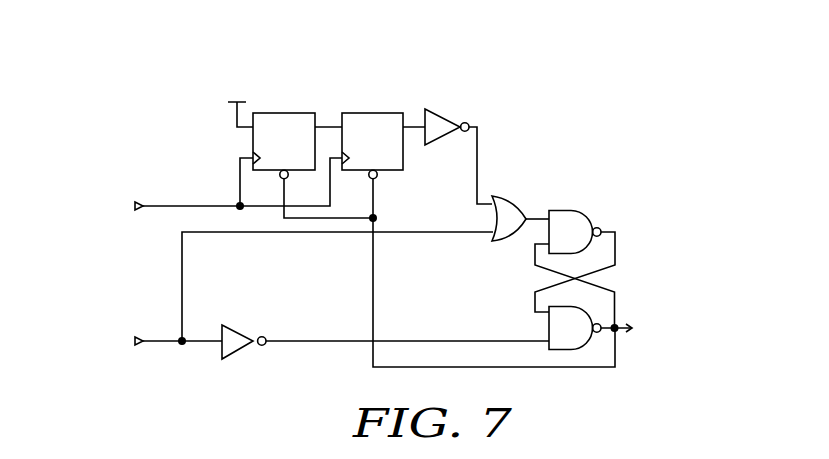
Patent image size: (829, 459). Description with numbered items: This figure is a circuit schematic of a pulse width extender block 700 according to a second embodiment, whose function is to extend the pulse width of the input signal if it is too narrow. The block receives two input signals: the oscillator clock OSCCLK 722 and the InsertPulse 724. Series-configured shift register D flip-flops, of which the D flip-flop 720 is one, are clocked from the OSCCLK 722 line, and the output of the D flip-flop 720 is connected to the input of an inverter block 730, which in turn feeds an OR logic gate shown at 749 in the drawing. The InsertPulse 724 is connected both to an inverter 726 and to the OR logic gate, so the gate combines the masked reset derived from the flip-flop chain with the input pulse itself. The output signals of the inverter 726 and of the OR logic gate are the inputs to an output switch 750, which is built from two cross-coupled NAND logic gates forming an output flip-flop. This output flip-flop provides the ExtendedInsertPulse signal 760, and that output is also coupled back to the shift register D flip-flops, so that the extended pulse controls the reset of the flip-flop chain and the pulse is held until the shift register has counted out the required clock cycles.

The pulse width extender block 700 is at (197, 52).
The D flip-flop 720 is at (290, 108).
The OSCCLK 722 is at (95, 188).
The InsertPulse 724 is at (73, 329).
The inverter 726 is at (237, 325).
The inverter block 730 is at (431, 108).
The OR gate 749 is at (509, 197).
The output switch 750 is at (568, 207).
The ExtendedInsertPulse signal 760 is at (549, 329).